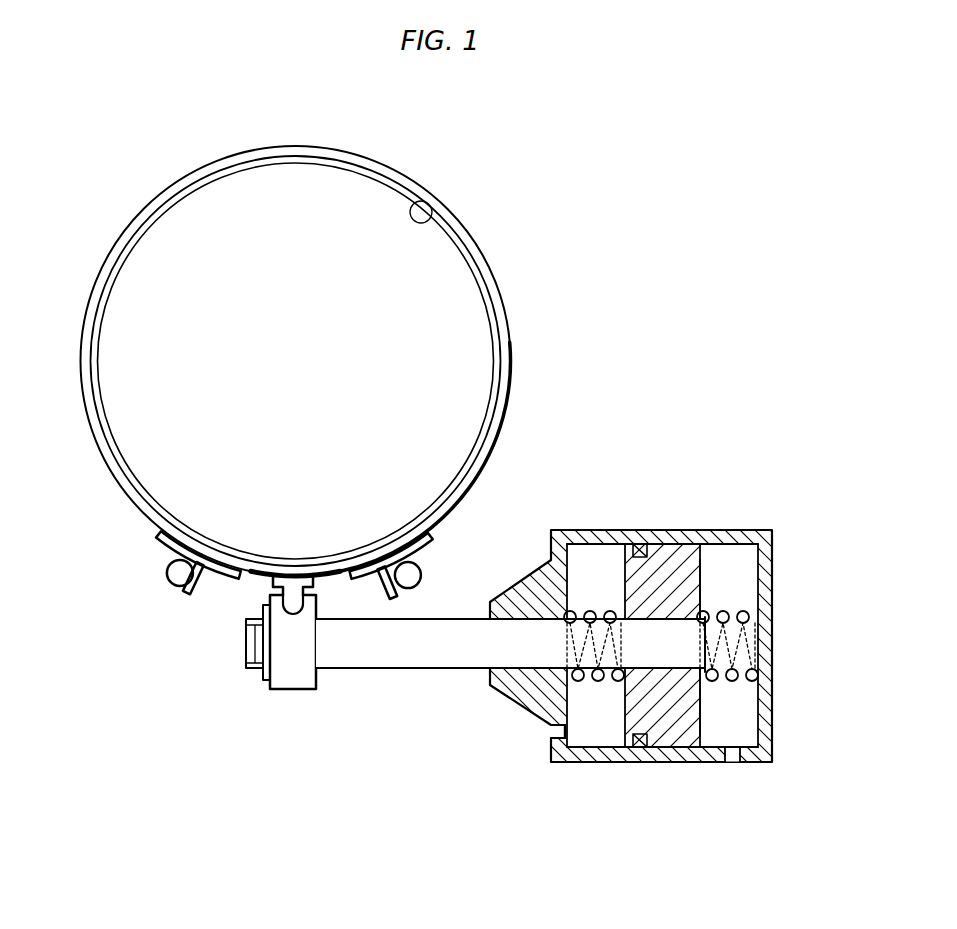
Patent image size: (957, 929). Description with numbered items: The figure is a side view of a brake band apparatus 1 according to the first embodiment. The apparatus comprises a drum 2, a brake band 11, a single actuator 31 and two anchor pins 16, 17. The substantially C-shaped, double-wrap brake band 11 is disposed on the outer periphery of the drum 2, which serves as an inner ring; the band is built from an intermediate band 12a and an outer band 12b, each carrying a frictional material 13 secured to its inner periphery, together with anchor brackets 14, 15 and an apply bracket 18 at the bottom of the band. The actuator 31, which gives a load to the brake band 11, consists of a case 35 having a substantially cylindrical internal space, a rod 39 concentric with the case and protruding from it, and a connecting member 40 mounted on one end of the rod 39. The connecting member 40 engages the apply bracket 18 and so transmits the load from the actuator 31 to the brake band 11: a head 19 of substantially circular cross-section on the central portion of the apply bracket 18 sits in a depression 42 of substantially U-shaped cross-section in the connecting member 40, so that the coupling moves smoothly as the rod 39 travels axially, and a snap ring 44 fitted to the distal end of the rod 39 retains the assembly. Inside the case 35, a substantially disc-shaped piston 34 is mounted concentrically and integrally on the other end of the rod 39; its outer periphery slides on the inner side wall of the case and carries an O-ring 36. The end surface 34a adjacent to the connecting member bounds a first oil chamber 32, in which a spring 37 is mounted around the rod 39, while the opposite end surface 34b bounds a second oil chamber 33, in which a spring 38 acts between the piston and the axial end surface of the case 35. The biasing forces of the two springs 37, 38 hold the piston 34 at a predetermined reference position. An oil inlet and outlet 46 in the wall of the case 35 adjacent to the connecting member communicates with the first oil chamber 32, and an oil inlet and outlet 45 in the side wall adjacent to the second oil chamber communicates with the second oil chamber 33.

The brake band apparatus 1 is at (548, 160).
The drum 2 is at (305, 194).
The brake band 11 is at (522, 316).
The intermediate band 12a is at (340, 577).
The outer band 12b is at (477, 260).
The frictional material 13 is at (414, 199).
The anchor bracket 14 is at (193, 597).
The anchor bracket 15 is at (430, 545).
The anchor pin 16 is at (175, 572).
The anchor pin 17 is at (412, 573).
The apply bracket 18 is at (273, 583).
The head 19 is at (320, 640).
The actuator 31 is at (791, 488).
The first oil chamber 32 is at (588, 742).
The second oil chamber 33 is at (745, 704).
The piston 34 is at (775, 539).
The end surface of piston 34a is at (610, 580).
The end surface of piston 34b is at (748, 594).
The case 35 is at (703, 530).
The O-ring 36 is at (641, 546).
The spring 37 is at (573, 546).
The spring 38 is at (738, 612).
The rod 39 is at (447, 655).
The connecting member 40 is at (290, 635).
The depression 42 is at (266, 630).
The snap ring 44 is at (256, 664).
The oil inlet and outlet 45 is at (728, 765).
The oil inlet and outlet 46 is at (556, 738).